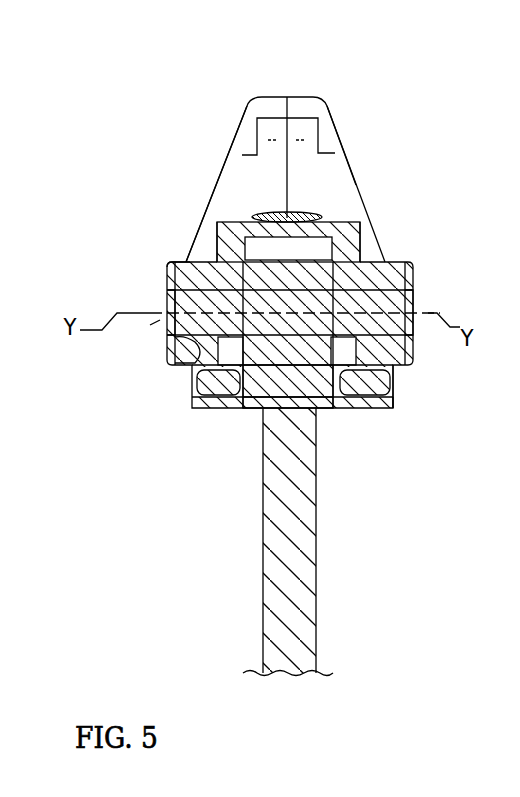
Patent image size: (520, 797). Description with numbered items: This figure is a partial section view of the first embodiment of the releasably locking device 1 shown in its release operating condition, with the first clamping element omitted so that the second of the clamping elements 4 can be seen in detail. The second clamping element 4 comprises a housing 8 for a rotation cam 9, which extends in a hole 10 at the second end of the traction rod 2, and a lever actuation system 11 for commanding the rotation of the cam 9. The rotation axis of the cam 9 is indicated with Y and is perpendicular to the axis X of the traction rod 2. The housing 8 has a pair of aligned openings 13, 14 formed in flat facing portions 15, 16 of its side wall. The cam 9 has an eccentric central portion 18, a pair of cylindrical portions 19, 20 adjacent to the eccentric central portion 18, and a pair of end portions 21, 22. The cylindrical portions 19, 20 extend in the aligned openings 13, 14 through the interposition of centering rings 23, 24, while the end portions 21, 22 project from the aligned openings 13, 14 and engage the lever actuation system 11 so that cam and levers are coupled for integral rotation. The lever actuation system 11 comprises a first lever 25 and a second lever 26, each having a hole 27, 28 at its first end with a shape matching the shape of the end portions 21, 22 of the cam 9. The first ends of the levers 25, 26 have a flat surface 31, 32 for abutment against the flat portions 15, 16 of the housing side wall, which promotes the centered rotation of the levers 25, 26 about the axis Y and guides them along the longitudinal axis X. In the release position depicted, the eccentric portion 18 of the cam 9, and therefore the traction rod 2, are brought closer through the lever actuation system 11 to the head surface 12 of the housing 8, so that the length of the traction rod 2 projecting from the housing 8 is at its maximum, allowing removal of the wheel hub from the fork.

The releasably locking device 1 is at (396, 486).
The traction rod 2 is at (318, 592).
The second clamping element 4 is at (168, 149).
The housing 8 is at (322, 217).
The rotation cam 9 is at (150, 327).
The hole 10 is at (262, 418).
The lever actuation system 11 is at (293, 92).
The head surface 12 is at (335, 408).
The aligned opening 13 is at (413, 279).
The aligned opening 14 is at (172, 264).
The flat facing portion 15 is at (360, 262).
The flat facing portion 16 is at (218, 230).
The eccentric central portion 18 is at (250, 410).
The cylindrical portion 19 is at (372, 365).
The cylindrical portion 20 is at (185, 337).
The end portion 21 is at (415, 302).
The end portion 22 is at (172, 336).
The centering ring 23 is at (393, 411).
The centering ring 24 is at (200, 358).
The first lever 25 is at (327, 107).
The second lever 26 is at (252, 107).
The hole 27 is at (395, 350).
The hole 28 is at (168, 294).
The flat surface 31 is at (393, 256).
The flat surface 32 is at (215, 250).